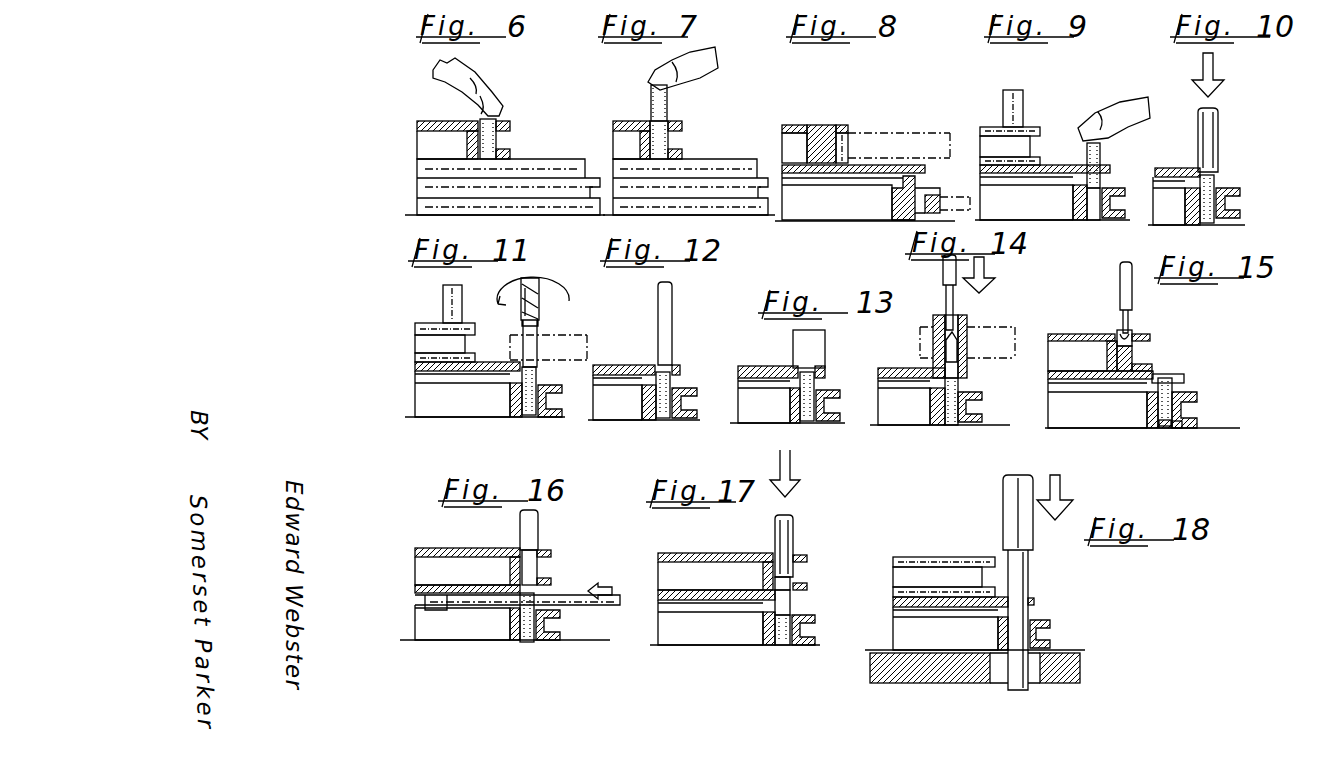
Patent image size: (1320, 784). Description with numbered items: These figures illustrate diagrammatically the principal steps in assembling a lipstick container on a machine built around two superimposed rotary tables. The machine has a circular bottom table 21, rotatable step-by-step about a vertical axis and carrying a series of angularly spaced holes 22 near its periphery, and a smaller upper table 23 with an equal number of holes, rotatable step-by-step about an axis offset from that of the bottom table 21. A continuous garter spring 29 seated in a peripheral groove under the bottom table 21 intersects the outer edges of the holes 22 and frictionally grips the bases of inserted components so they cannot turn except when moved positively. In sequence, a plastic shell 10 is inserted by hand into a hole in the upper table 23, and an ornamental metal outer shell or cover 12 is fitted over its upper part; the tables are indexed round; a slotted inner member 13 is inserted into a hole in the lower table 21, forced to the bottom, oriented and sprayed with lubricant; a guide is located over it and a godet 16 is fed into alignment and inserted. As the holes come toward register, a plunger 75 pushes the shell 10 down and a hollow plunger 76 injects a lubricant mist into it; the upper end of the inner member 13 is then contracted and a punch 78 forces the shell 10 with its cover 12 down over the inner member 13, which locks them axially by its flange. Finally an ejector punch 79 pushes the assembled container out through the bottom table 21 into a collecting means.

In FIG. 6, the plastic shell 10 is at (498, 124).
In FIG. 7, the plastic shell 10 is at (660, 143).
In FIG. 15, the plastic shell 10 is at (1134, 363).
In FIG. 17, the plastic shell 10 is at (791, 606).
In FIG. 7, the outer shell or cover 12 is at (668, 108).
In FIG. 15, the outer shell or cover 12 is at (1133, 348).
In FIG. 17, the outer shell or cover 12 is at (791, 583).
In FIG. 9, the inner member 13 is at (1101, 151).
In FIG. 10, the inner member 13 is at (1216, 179).
In FIG. 11, the inner member 13 is at (533, 420).
In FIG. 13, the inner member 13 is at (812, 424).
In FIG. 14, the inner member 13 is at (952, 427).
In FIG. 15, the inner member 13 is at (1160, 430).
In FIG. 16, the inner member 13 is at (527, 645).
In FIG. 17, the inner member 13 is at (780, 647).
In FIG. 15, the cup or godet 16 is at (1172, 430).
In FIG. 8, the bottom table 21 is at (840, 210).
In FIG. 9, the bottom table 21 is at (1058, 212).
In FIG. 11, the bottom table 21 is at (473, 420).
In FIG. 12, the bottom table 21 is at (620, 422).
In FIG. 13, the bottom table 21 is at (765, 412).
In FIG. 14, the bottom table 21 is at (908, 416).
In FIG. 15, the bottom table 21 is at (1097, 416).
In FIG. 16, the bottom table 21 is at (465, 637).
In FIG. 17, the bottom table 21 is at (717, 640).
In FIG. 18, the bottom table 21 is at (915, 636).
In FIG. 9, the holes 22 is at (1096, 214).
In FIG. 6, the upper table 23 is at (442, 122).
In FIG. 7, the upper table 23 is at (620, 122).
In FIG. 8, the upper table 23 is at (823, 125).
In FIG. 15, the upper table 23 is at (1081, 334).
In FIG. 16, the upper table 23 is at (469, 548).
In FIG. 17, the upper table 23 is at (715, 553).
In FIG. 18, the upper table 23 is at (942, 557).
In FIG. 15, the garter spring 29 is at (1185, 430).
In FIG. 16, the plunger 75 is at (539, 531).
In FIG. 15, the hollow plunger 76 is at (1133, 297).
In FIG. 17, the punch 78 is at (794, 539).
In FIG. 18, the ejector punch 79 is at (1030, 588).